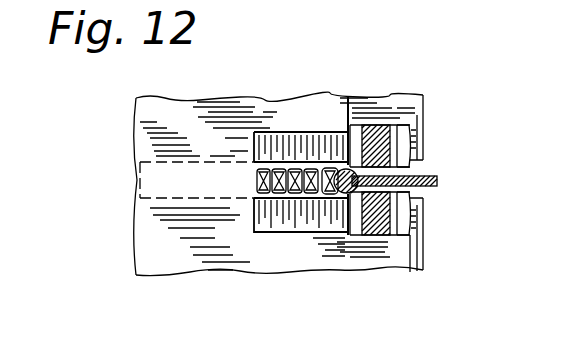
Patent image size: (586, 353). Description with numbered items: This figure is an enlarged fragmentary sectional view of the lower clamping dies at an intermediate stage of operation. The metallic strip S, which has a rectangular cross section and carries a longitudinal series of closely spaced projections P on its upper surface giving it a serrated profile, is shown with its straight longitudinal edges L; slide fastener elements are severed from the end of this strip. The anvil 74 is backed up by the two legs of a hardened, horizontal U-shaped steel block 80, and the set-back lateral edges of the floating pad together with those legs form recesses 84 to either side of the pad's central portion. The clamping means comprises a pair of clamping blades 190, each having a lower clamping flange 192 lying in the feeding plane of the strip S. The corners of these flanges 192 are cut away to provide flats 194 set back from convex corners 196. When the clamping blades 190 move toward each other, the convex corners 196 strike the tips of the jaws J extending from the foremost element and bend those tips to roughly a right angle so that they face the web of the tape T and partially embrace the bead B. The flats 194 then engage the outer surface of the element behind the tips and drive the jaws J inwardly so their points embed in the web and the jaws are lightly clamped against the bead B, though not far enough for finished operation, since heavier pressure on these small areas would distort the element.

The U-shaped block 80 is at (168, 253).
The recesses 84 is at (303, 218).
The longitudinal edges L is at (272, 200).
The jaws J is at (340, 200).
The metallic strip S is at (246, 152).
The projections P is at (277, 170).
The slide fastener tape T is at (412, 192).
The flats 194 is at (412, 174).
The clamping blades 190 is at (387, 132).
The convex corners 196 is at (406, 145).
The lower clamping flange 192 is at (420, 134).
The anvil 74 is at (418, 257).
The bead B is at (380, 235).